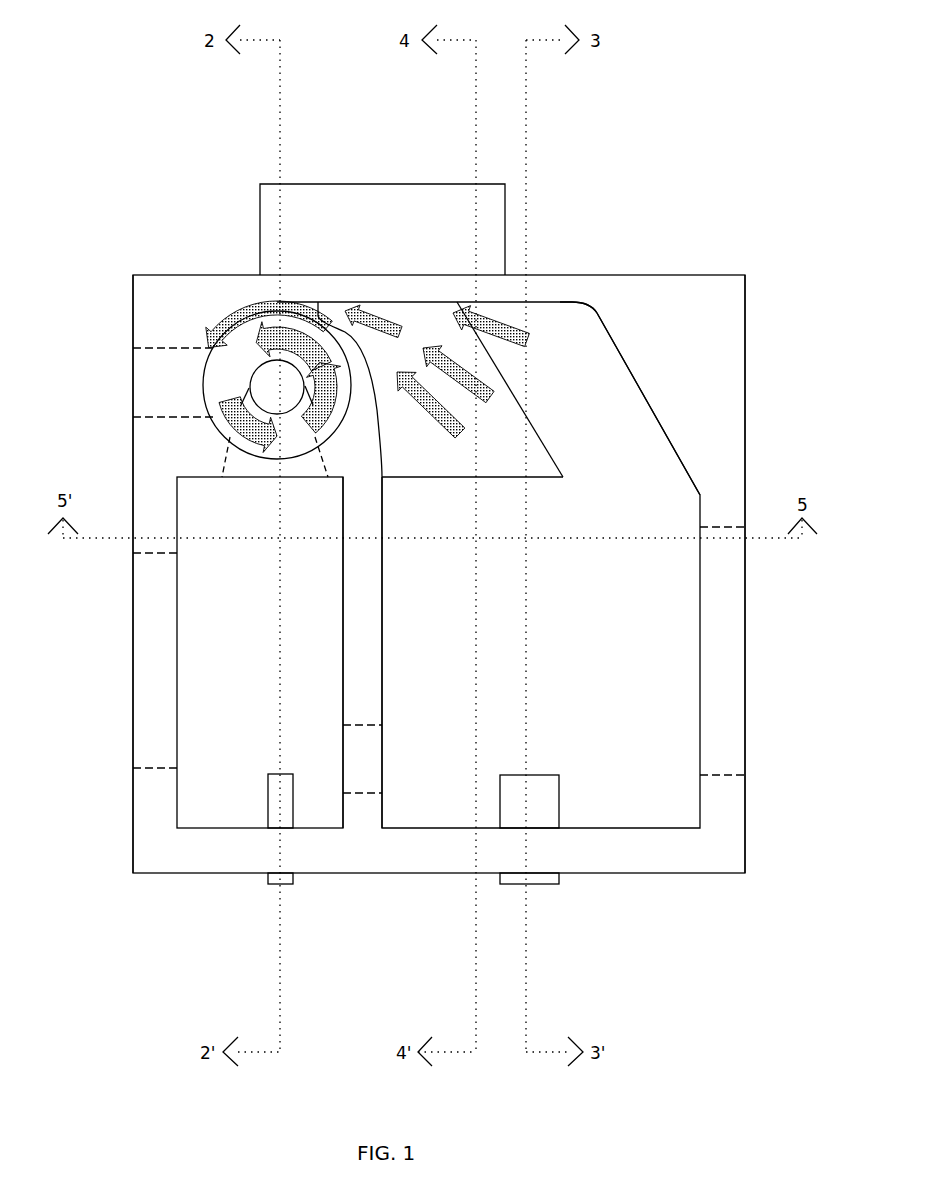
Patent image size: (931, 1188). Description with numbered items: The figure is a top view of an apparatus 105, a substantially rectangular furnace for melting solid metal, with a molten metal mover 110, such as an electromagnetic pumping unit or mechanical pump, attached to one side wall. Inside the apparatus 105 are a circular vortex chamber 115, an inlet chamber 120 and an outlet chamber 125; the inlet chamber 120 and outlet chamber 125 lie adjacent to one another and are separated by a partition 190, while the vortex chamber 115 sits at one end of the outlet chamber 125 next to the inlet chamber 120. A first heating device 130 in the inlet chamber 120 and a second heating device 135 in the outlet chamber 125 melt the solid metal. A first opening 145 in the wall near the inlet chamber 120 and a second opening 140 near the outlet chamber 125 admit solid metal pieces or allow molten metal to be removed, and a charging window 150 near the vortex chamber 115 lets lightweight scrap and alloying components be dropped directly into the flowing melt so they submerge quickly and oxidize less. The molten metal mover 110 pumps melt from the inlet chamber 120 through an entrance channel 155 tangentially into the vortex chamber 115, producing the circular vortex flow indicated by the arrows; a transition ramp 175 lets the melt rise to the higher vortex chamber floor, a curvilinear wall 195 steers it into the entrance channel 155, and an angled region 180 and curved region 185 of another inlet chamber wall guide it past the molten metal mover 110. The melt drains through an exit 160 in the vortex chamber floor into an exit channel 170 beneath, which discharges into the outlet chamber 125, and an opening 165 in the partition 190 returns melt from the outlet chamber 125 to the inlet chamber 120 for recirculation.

The apparatus 105 is at (133, 102).
The molten metal mover 110 is at (343, 186).
The vortex chamber 115 is at (277, 380).
The inlet chamber 120 is at (488, 565).
The outlet chamber 125 is at (260, 652).
The first heating device 130 is at (520, 803).
The second heating device 135 is at (273, 805).
The second opening 140 is at (140, 622).
The first opening 145 is at (720, 670).
The charging window 150 is at (155, 372).
The entrance channel 155 is at (325, 302).
The exit 160 is at (272, 388).
The opening 165 is at (355, 753).
The exit channel 170 is at (253, 460).
The transition ramp 175 is at (400, 422).
The angled region 180 is at (655, 405).
The curved region 185 is at (598, 305).
The partition 190 is at (362, 630).
The wall 195 is at (380, 372).